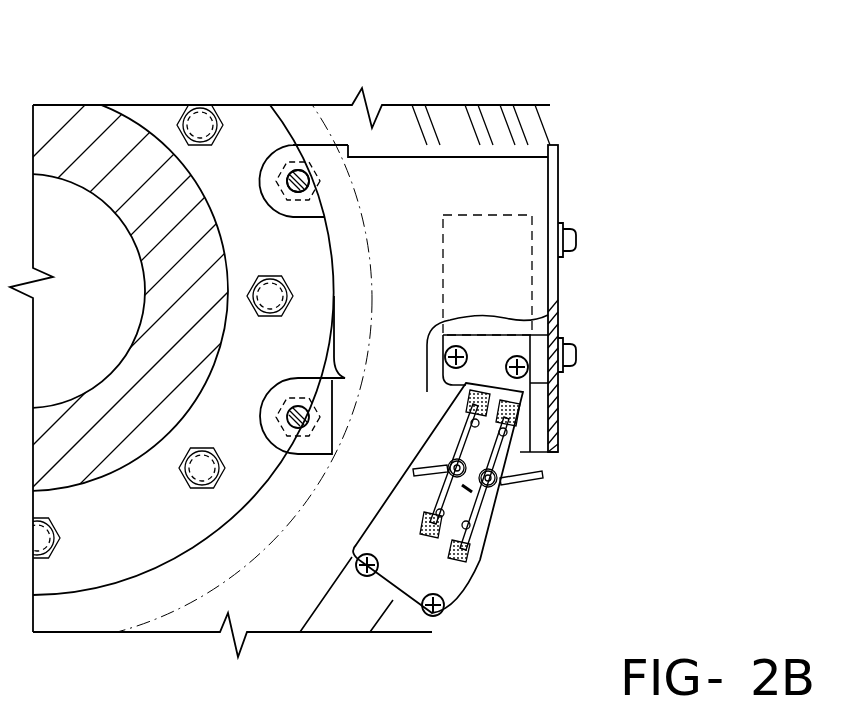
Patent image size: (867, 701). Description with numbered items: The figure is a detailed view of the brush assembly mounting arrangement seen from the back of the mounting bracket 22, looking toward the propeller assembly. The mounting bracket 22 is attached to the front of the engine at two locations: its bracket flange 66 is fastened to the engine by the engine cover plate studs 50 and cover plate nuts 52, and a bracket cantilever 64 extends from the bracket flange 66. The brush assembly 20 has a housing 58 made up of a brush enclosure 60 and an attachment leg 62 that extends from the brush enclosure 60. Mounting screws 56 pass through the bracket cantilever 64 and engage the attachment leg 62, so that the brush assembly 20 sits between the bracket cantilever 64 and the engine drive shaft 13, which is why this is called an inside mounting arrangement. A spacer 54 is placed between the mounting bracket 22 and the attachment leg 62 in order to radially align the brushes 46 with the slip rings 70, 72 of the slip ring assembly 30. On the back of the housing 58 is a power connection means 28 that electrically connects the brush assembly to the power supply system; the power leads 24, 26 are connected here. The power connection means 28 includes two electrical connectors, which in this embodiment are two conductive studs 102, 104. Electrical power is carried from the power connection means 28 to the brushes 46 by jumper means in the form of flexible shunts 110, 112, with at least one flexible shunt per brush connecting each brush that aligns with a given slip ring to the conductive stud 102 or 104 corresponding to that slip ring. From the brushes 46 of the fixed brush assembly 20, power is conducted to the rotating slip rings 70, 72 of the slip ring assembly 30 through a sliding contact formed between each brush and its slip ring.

The engine drive shaft 13 is at (104, 112).
The brush assembly 20 is at (481, 568).
The mounting bracket 22 is at (523, 266).
The power lead 24 is at (418, 472).
The power lead 26 is at (545, 474).
The power connection means 28 is at (496, 490).
The slip ring assembly 30 is at (492, 89).
The brushes 46 is at (463, 468).
The engine cover plate studs 50 is at (301, 171).
The cover plate nuts 52 is at (278, 176).
The spacer 54 is at (553, 385).
The mounting screws 56 is at (656, 297).
The housing 58 is at (472, 495).
The brush enclosure 60 is at (470, 510).
The attachment leg 62 is at (440, 286).
The bracket cantilever 64 is at (560, 283).
The bracket flange 66 is at (539, 141).
The slip ring 70 is at (447, 112).
The slip ring 72 is at (488, 112).
The conductive stud 102 is at (476, 470).
The conductive stud 104 is at (496, 440).
The flexible shunt 110 is at (492, 432).
The flexible shunt 112 is at (486, 512).